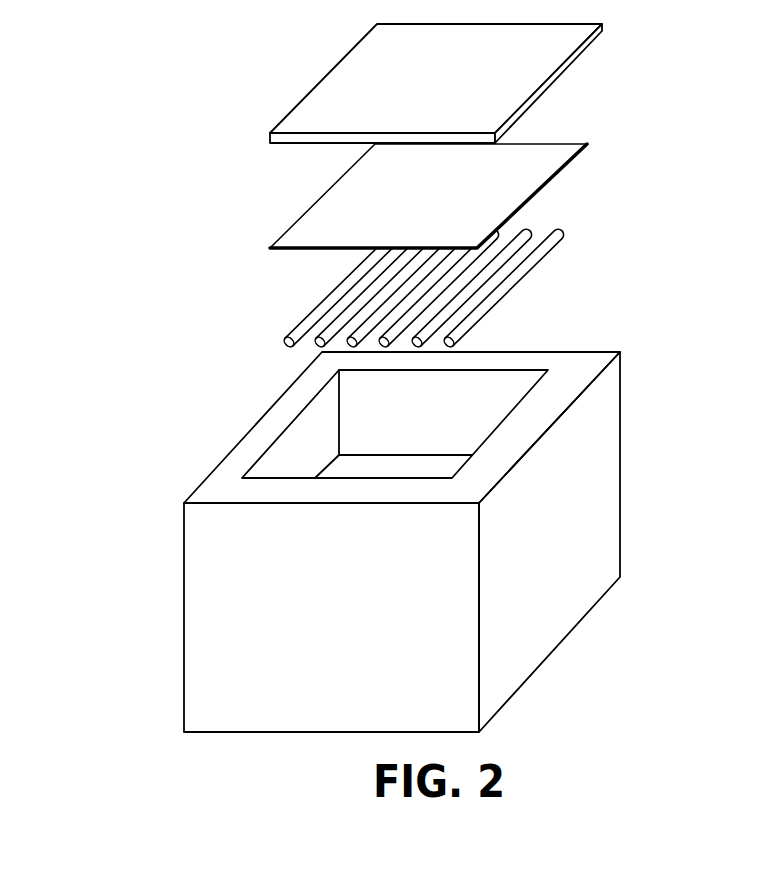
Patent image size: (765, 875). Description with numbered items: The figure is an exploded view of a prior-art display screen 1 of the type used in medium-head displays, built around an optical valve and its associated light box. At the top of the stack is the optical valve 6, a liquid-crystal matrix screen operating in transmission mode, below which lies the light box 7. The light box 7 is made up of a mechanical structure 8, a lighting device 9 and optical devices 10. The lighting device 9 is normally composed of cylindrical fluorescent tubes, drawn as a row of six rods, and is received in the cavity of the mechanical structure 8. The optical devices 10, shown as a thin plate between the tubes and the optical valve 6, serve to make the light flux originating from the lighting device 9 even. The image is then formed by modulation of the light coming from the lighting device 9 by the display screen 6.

The display screen 1 is at (155, 265).
The optical valve 6 is at (580, 68).
The light box 7 is at (128, 538).
The mechanical structure 8 is at (602, 422).
The lighting device 9 is at (535, 270).
The optical devices 10 is at (560, 177).